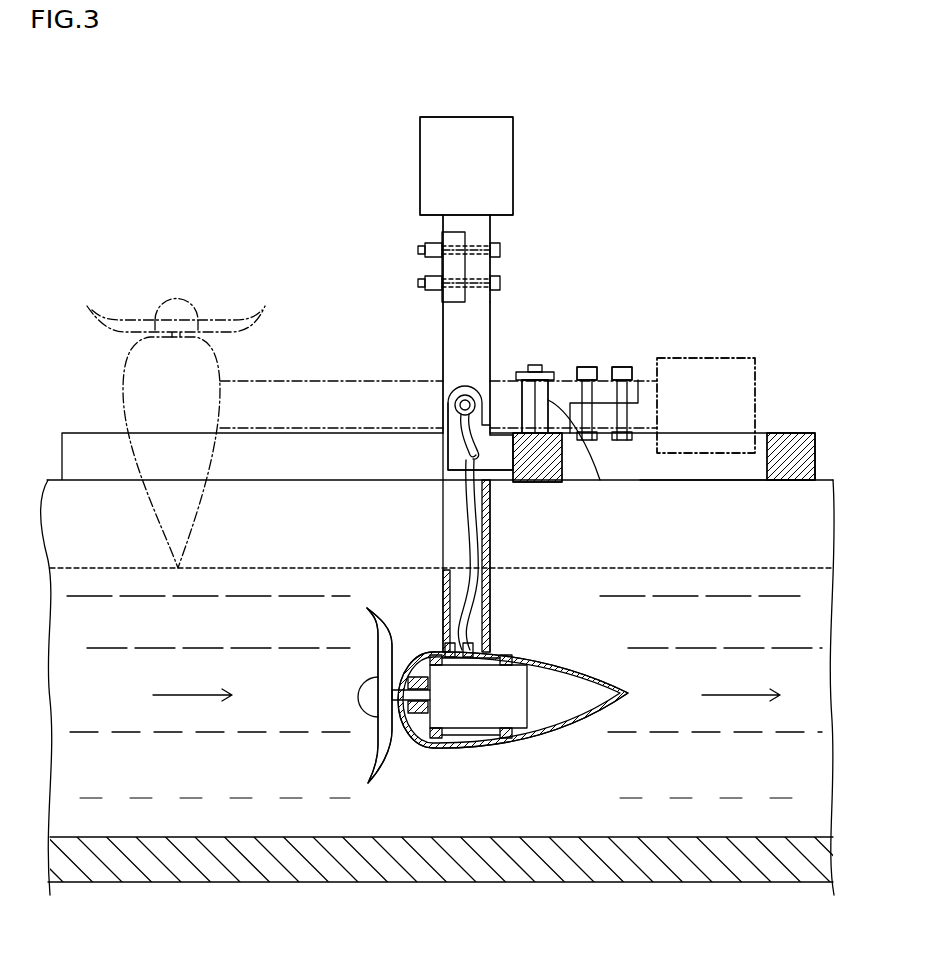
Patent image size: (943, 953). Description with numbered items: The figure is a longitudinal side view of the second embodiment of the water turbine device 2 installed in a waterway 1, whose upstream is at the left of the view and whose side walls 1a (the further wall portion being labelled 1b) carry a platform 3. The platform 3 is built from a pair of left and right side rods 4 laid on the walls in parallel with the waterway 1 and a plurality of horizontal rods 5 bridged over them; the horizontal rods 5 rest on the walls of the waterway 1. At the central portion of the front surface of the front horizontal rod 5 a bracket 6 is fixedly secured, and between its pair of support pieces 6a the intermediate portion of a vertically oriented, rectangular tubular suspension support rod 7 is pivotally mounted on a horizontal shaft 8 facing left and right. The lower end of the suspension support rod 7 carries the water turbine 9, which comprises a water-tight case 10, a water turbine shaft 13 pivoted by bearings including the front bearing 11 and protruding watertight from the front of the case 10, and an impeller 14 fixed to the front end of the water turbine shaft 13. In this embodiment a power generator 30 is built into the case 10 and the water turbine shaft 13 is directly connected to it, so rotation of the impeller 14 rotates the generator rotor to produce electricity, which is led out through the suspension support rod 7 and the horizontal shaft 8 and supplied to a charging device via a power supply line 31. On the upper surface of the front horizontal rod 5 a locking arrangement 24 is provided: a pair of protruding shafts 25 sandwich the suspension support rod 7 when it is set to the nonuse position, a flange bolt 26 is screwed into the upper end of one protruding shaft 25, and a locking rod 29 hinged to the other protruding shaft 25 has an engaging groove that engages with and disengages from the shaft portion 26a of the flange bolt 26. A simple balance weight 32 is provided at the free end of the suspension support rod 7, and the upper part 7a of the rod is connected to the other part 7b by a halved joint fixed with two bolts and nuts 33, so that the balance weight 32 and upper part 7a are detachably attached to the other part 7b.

The waterway 1 is at (830, 467).
The side wall 1a is at (72, 530).
The channel side wall 1b is at (690, 560).
The water turbine device 2 is at (404, 186).
The platform 3 is at (796, 420).
The side rod 4 is at (722, 440).
The horizontal rod 5 is at (775, 433).
The bracket 6 is at (490, 470).
The support piece 6a is at (445, 470).
The suspension support rod 7 is at (443, 330).
The upper part of suspension support rod 7a is at (490, 228).
The other part of suspension support rod 7b is at (490, 320).
The horizontal shaft 8 is at (447, 395).
The water turbine 9 is at (107, 385).
The case 10 is at (520, 745).
The front bearing 11 is at (415, 745).
The water turbine shaft 13 is at (422, 683).
The impeller 14 is at (125, 320).
The bolt 24 is at (554, 356).
The protruding shaft 25 is at (548, 420).
The flange bolt 26 is at (535, 365).
The shaft portion of flange bolt 26a is at (560, 405).
The locking rod 29 is at (560, 378).
The power generator 30 is at (535, 693).
The power supply line 31 is at (445, 583).
The balance weight 32 is at (513, 170).
The bolts and nuts 33 is at (425, 283).